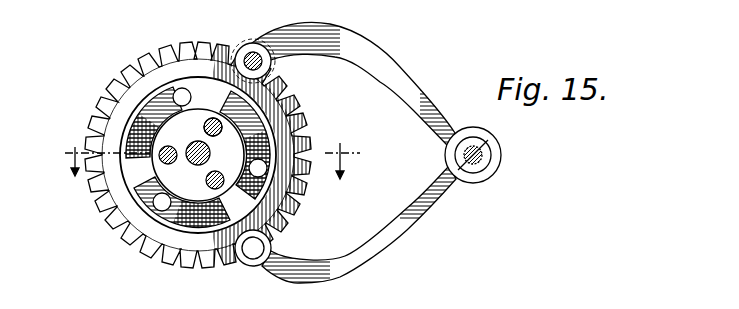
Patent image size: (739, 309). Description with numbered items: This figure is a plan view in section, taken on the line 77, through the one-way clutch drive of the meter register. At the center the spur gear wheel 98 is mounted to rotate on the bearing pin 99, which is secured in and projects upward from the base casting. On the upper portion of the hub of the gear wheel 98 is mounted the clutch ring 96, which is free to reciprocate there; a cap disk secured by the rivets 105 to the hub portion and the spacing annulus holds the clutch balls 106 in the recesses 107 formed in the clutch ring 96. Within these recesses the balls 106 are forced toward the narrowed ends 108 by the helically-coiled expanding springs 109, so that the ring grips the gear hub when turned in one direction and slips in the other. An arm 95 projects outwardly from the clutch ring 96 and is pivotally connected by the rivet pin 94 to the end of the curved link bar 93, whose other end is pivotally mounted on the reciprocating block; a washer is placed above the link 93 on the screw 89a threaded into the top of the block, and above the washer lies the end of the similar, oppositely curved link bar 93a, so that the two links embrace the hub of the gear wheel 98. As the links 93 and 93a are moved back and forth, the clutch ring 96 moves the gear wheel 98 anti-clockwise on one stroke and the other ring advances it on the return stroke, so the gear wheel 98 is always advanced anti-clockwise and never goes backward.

The section line 77 is at (201, 161).
The screw 89a is at (485, 158).
The curved link bar 93 is at (398, 78).
The curved link bar 93a is at (410, 221).
The rivet pin 94 is at (254, 51).
The arm 95 is at (241, 51).
The clutch ring 96 is at (132, 113).
The spur gear wheel 98 is at (157, 265).
The bearing pin 99 is at (213, 134).
The rivets 105 is at (207, 128).
The clutch balls 106 is at (171, 86).
The recesses 107 is at (134, 125).
The narrowed ends 108 is at (183, 88).
The helically-coiled expanding springs 109 is at (147, 108).